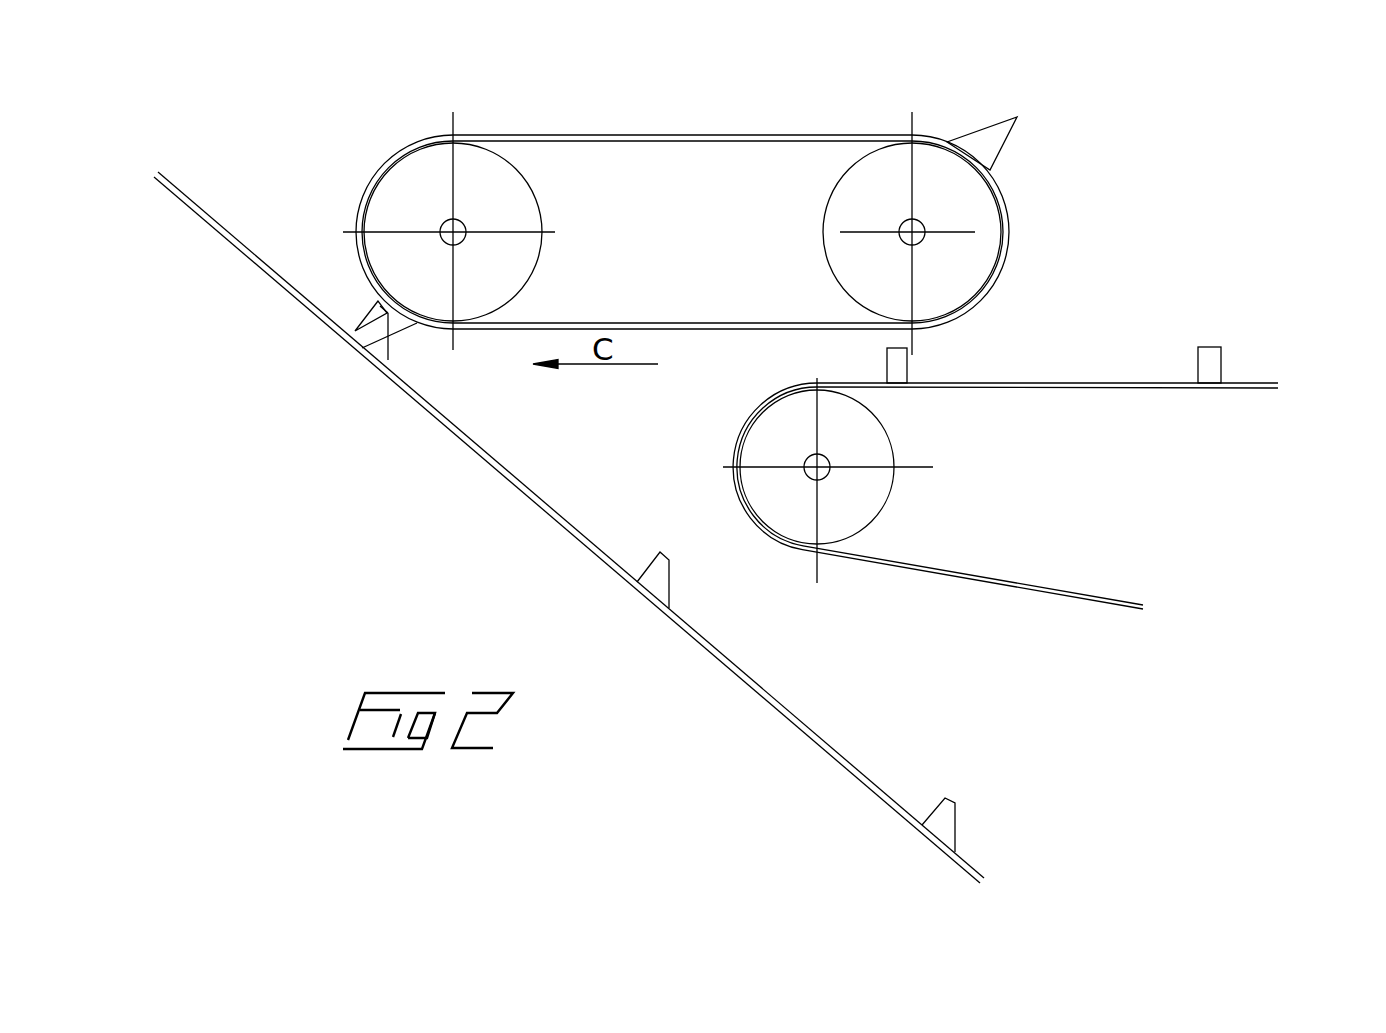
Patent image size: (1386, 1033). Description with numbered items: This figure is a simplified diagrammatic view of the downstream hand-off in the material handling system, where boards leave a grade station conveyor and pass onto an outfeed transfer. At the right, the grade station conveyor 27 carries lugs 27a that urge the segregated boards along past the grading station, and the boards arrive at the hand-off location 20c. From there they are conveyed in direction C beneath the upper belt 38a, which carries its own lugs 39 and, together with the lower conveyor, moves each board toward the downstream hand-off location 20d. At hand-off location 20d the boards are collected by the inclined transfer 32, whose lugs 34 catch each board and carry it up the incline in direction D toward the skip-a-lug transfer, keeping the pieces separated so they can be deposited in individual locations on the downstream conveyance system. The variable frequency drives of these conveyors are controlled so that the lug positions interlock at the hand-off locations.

The belt 38a is at (700, 135).
The lugs 39 is at (1017, 147).
The inclined transfer 32 is at (585, 543).
The lugs 34 is at (392, 348).
The board hand-off location 20d is at (438, 360).
The lower conveyor belt 27 is at (1242, 390).
The board hand-off location 20c is at (950, 354).
The lugs 27a is at (1221, 347).